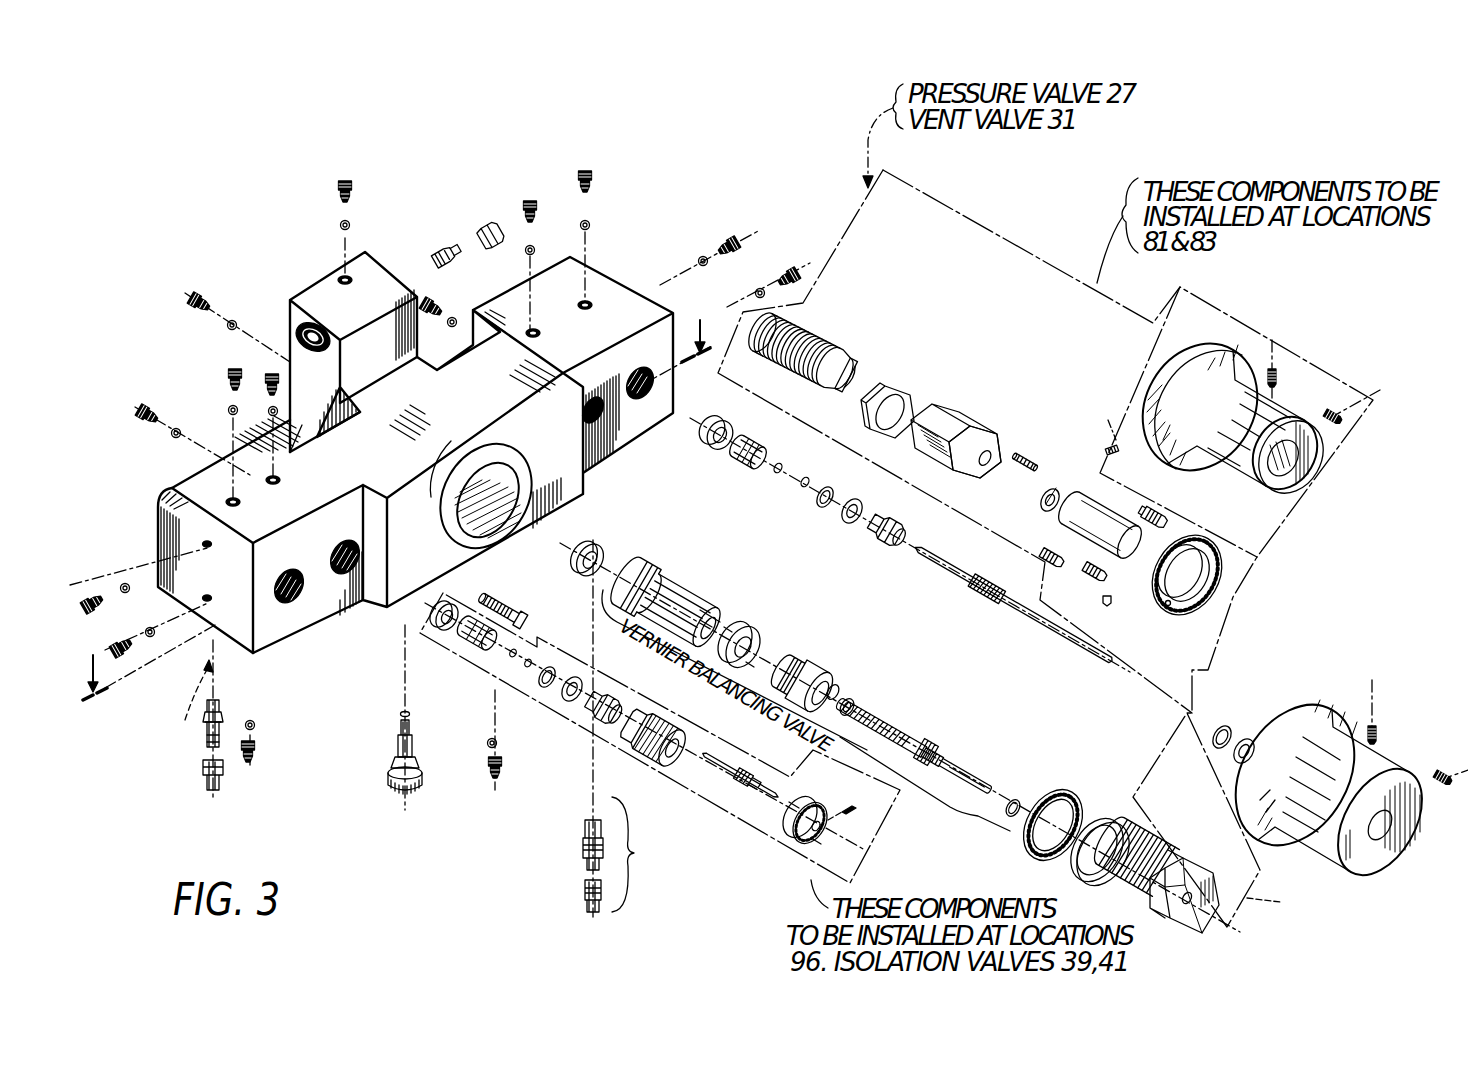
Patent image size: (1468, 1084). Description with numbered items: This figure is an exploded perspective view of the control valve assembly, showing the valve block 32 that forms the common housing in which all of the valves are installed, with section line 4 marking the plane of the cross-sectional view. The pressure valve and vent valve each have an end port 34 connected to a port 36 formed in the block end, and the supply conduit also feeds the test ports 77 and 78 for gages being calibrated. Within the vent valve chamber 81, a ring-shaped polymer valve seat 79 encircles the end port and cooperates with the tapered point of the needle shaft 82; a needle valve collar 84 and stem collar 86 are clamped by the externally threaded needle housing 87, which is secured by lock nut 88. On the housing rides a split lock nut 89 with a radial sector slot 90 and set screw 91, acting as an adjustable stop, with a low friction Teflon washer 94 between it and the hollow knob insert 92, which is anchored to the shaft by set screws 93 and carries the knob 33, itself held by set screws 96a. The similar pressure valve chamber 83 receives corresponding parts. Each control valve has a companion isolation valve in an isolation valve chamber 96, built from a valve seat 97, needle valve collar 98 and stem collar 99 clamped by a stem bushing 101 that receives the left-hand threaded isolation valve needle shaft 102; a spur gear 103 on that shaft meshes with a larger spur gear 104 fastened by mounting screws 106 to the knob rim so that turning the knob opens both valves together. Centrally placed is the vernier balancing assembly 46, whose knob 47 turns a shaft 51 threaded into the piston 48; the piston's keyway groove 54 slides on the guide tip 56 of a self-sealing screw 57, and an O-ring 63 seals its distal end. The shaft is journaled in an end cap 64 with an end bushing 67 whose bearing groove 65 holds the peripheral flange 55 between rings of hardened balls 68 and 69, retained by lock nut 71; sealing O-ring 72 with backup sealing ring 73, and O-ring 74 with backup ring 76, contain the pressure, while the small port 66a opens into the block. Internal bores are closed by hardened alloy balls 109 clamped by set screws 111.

The section line 4- 4 is at (385, 499).
The valve block 32 is at (170, 468).
The knob 33 is at (1295, 485).
The end port 34 is at (202, 708).
The pressure port 36 is at (203, 768).
The vernier balancing assembly 46 is at (1077, 829).
The knob 47 is at (1387, 853).
The piston 48 is at (714, 612).
The shaft 51 is at (923, 740).
The spline or keyway groove 54 is at (705, 585).
The peripheral flange 55 is at (945, 750).
The guide tip 56 is at (398, 730).
The self-sealing screw 57 is at (392, 775).
The O-ring 63 is at (603, 553).
The end cap 64 is at (1160, 838).
The bearing groove 65 is at (836, 685).
The port 66a is at (548, 458).
The end bushing 67 is at (808, 660).
The ring of hardened balls 68 is at (852, 700).
The ring of hardened balls 69 is at (1015, 798).
The lock nut 71 is at (751, 635).
The sealing O-ring 72 is at (1222, 728).
The backup sealing ring 73 is at (1250, 740).
The O-ring 74 is at (1062, 790).
The backup ring 76 is at (1100, 825).
The test port 77 is at (290, 310).
The test port 78 is at (497, 210).
The valve seat 79 is at (712, 447).
The vent valve chamber 81 is at (647, 392).
The needle shaft 82 is at (986, 592).
The pressure valve chamber 83 is at (300, 602).
The needle valve collar 84 is at (745, 467).
The stem collar 86 is at (878, 545).
The needle housing 87 is at (828, 335).
The lock nut 88 is at (895, 385).
The split lock nut 89 is at (958, 420).
The radial sector slot 90 is at (987, 445).
The set screw 91 is at (1030, 452).
The knob insert 92 is at (1093, 505).
The set screw 93 is at (1108, 440).
The Teflon washer 94 is at (1053, 490).
The isolation valve chamber 96 is at (352, 574).
The set screw 96a is at (1340, 410).
The valve seat 97 is at (440, 632).
The needle valve collar 98 is at (476, 650).
The stem collar 99 is at (613, 702).
The stem bushing 101 is at (686, 713).
The isolation valve needle shaft 102 is at (760, 803).
The spur gear 103 is at (806, 846).
The spur gear 104 is at (1225, 580).
The mounting screw 106 is at (1168, 516).
The hardened alloy ball 109 is at (488, 745).
The set screw 111 is at (490, 762).